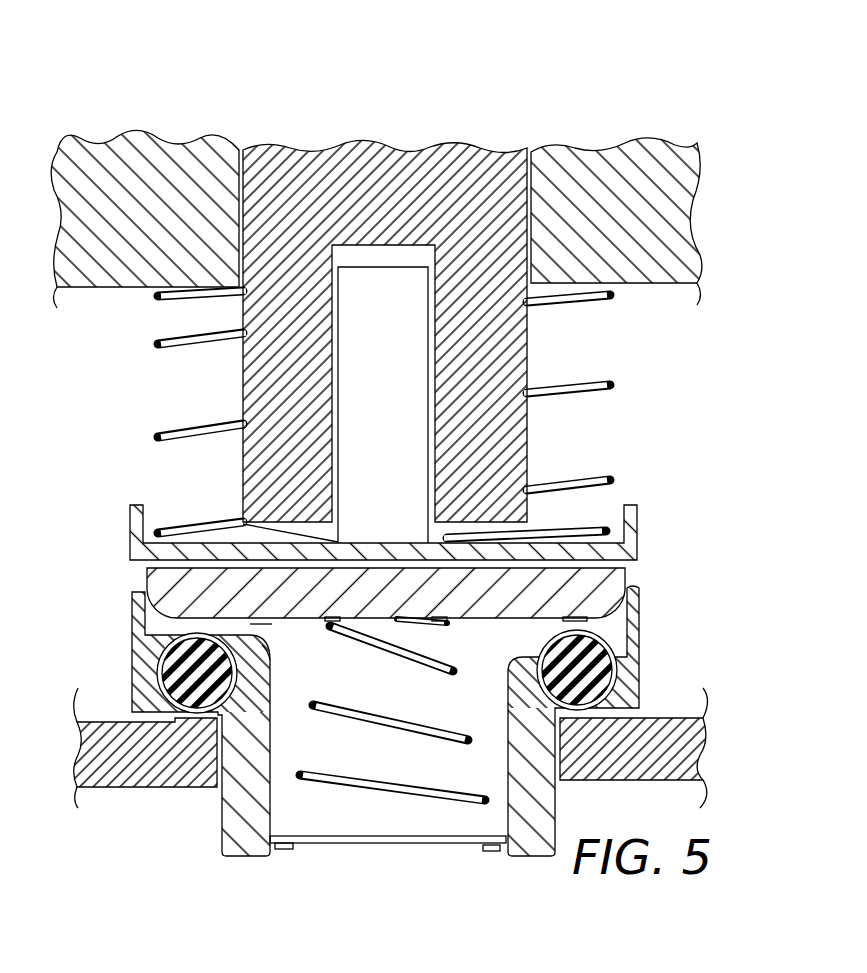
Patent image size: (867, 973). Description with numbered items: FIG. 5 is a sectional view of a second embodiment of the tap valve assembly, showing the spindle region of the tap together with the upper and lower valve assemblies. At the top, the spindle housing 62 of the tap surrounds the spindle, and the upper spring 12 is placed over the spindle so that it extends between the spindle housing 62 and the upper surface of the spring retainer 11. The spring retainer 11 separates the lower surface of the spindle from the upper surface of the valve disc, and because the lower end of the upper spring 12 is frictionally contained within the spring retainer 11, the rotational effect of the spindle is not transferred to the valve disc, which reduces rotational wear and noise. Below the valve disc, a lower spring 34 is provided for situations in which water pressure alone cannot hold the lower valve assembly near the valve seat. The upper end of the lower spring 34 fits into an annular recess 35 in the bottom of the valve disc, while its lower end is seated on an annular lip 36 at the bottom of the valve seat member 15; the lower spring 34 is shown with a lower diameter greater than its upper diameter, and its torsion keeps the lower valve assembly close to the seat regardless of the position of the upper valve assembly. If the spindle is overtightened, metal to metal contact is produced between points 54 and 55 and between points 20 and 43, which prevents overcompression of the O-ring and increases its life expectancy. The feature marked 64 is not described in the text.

The spring retainer 11 is at (640, 518).
The upper spring 12 is at (175, 345).
The valve seat member 15 is at (500, 745).
The contact point 20 is at (247, 727).
The lower spring 34 is at (428, 846).
The annular recess 35 is at (448, 622).
The annular lip 36 is at (290, 852).
The contact point 43 is at (183, 790).
The contact point 54 is at (272, 624).
The contact point 55 is at (280, 660).
The spindle housing 62 is at (95, 288).
The bore 64 is at (390, 243).